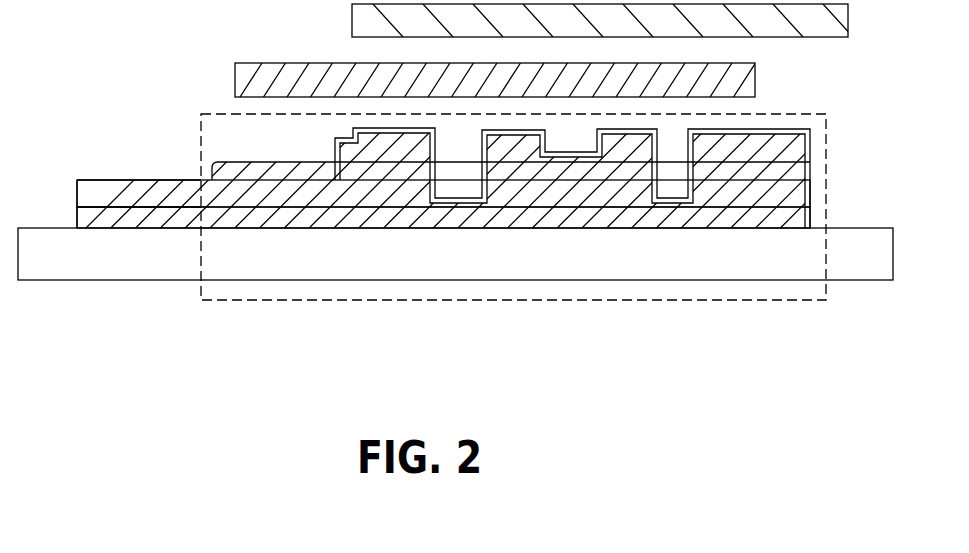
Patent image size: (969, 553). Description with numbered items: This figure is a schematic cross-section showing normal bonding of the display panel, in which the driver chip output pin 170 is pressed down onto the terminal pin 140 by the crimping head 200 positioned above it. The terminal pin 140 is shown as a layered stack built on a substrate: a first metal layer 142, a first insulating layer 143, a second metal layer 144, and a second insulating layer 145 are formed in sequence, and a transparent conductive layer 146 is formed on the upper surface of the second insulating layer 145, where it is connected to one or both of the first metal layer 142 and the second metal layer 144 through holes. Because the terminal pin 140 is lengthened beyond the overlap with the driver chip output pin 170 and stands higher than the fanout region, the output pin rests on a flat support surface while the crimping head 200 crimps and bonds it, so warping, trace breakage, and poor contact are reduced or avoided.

The crimping head 200 is at (822, 22).
The driver chip output pin 170 is at (736, 77).
The terminal pin 140 is at (430, 301).
The first metal layer 142 is at (793, 214).
The first insulating layer 143 is at (183, 190).
The second metal layer 144 is at (795, 167).
The second insulating layer 145 is at (232, 167).
The transparent conductive layer 146 is at (815, 133).